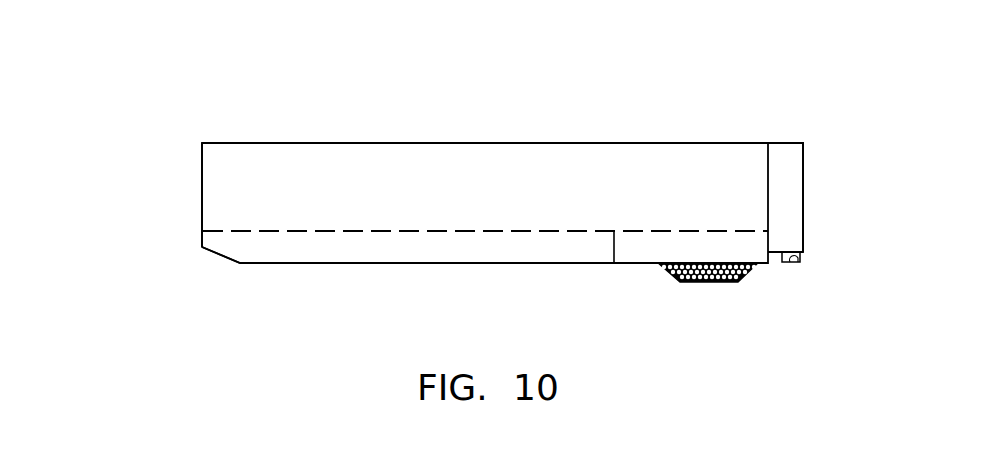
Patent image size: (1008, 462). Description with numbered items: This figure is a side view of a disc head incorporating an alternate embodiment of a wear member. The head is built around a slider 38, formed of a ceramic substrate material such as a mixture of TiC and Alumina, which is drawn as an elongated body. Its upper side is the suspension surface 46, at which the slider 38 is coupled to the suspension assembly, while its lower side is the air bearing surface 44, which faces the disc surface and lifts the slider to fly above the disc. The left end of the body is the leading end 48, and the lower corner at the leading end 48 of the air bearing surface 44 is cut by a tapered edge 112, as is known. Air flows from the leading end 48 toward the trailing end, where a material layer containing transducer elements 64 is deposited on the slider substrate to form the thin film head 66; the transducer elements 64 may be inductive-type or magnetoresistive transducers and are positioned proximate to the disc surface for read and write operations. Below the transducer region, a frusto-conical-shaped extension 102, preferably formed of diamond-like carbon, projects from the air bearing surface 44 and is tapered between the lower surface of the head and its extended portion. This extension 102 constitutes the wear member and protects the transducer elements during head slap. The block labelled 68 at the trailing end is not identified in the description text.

The slider 38 is at (556, 128).
The suspension surface 46 is at (298, 143).
The leading end 48 is at (200, 222).
The tapered edge 112 is at (213, 253).
The air bearing surface 44 is at (377, 263).
The frusto-conical-shaped extension 102 is at (703, 263).
The thin film head 66 is at (789, 142).
The trailing block 68 is at (792, 172).
The transducer elements 64 is at (790, 253).